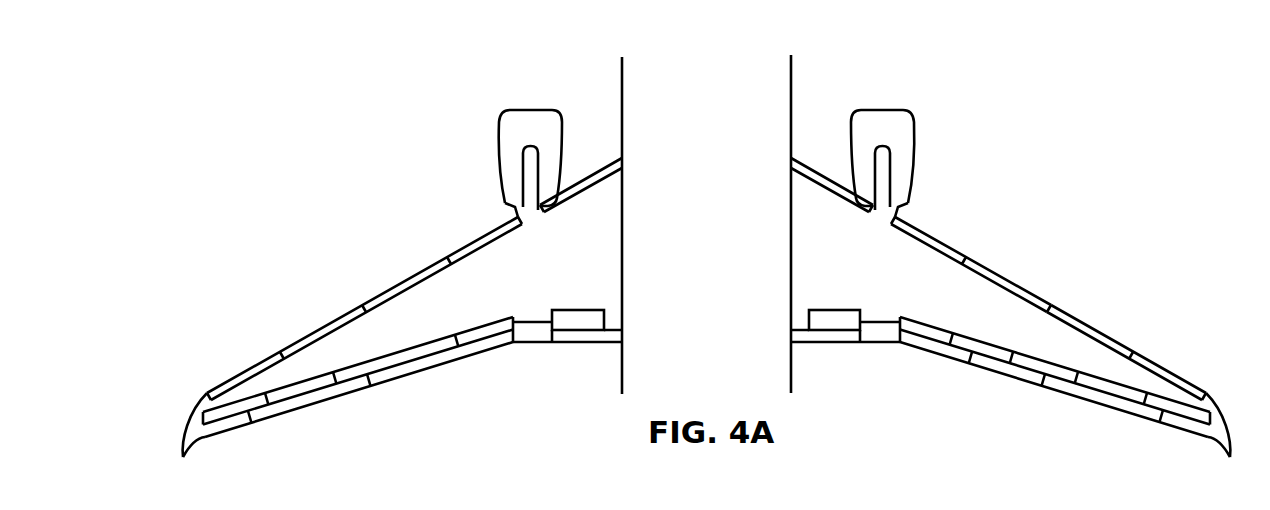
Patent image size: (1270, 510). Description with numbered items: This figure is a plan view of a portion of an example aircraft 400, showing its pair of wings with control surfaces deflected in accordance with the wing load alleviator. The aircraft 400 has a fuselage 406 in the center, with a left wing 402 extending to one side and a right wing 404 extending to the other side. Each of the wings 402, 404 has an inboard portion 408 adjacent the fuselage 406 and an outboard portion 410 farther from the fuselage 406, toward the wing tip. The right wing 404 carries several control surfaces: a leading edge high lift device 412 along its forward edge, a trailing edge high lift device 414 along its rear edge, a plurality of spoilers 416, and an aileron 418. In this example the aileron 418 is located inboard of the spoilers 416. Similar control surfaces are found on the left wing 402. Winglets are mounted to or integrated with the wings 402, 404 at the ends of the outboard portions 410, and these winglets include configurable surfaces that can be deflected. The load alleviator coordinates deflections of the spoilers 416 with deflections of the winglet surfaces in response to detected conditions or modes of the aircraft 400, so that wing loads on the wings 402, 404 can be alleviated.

The aircraft 400 is at (622, 60).
The left wing 402 is at (477, 240).
The right wing 404 is at (813, 170).
The fuselage 406 is at (722, 131).
The inboard portion 408 is at (596, 266).
The outboard portion 410 is at (277, 388).
The leading edge high lift device 412 is at (913, 228).
The trailing edge high lift device 414 is at (1111, 398).
The spoilers 416 is at (1182, 412).
The aileron 418 is at (872, 333).